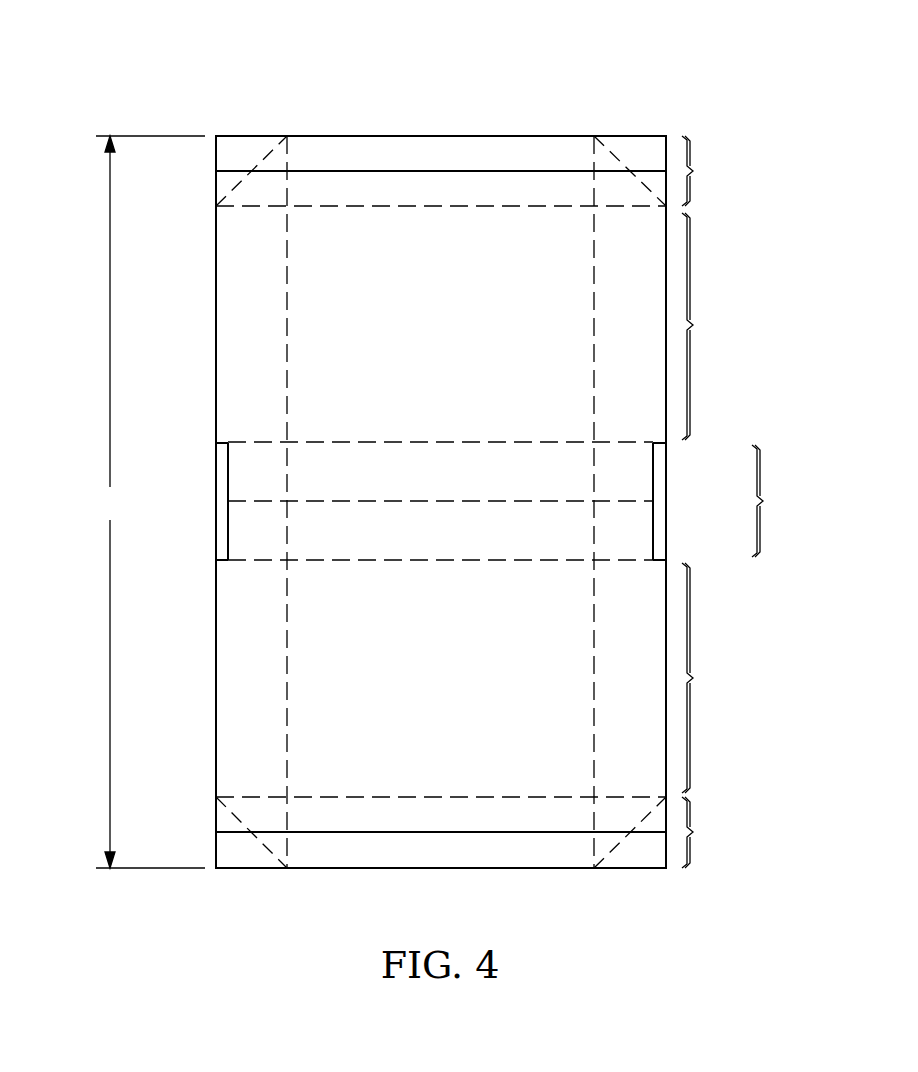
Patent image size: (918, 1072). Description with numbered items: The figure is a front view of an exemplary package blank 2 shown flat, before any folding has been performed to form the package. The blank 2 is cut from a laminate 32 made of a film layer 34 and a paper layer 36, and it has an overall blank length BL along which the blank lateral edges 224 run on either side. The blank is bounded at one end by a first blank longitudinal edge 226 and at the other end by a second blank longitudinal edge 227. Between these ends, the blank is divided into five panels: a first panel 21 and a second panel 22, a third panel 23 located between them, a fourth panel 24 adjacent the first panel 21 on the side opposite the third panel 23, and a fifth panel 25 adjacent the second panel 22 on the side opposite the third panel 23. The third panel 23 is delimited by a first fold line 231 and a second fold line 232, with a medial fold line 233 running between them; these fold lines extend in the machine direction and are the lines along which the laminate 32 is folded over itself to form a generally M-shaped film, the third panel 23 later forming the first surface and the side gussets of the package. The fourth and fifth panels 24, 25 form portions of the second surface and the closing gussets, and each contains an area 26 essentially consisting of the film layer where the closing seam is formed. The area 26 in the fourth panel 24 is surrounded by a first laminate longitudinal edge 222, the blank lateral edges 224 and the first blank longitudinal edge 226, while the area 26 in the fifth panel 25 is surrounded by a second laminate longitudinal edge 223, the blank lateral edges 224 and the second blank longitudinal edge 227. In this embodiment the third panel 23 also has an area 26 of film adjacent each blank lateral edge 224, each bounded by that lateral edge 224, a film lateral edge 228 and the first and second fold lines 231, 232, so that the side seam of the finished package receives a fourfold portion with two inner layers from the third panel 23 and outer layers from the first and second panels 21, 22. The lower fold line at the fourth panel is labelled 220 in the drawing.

The blank 2 is at (597, 90).
The first panel 21 is at (707, 678).
The second panel 22 is at (707, 326).
The third panel 23 is at (778, 501).
The fourth panel 24 is at (707, 832).
The fifth panel 25 is at (707, 171).
The area 26 is at (321, 146).
The laminate 32 is at (425, 339).
The film layer 34 is at (380, 146).
The paper layer 36 is at (225, 325).
The bottom fold line 220 is at (440, 868).
The first laminate longitudinal edge 222 is at (475, 834).
The second laminate longitudinal edge 223 is at (465, 169).
The blank lateral edge 224 is at (216, 455).
The first blank longitudinal edge 226 is at (560, 868).
The second blank longitudinal edge 227 is at (511, 136).
The film lateral edge 228 is at (226, 530).
The first fold line 231 is at (400, 560).
The second fold line 232 is at (400, 441).
The medial fold line 233 is at (452, 500).
The blank length BL is at (150, 502).